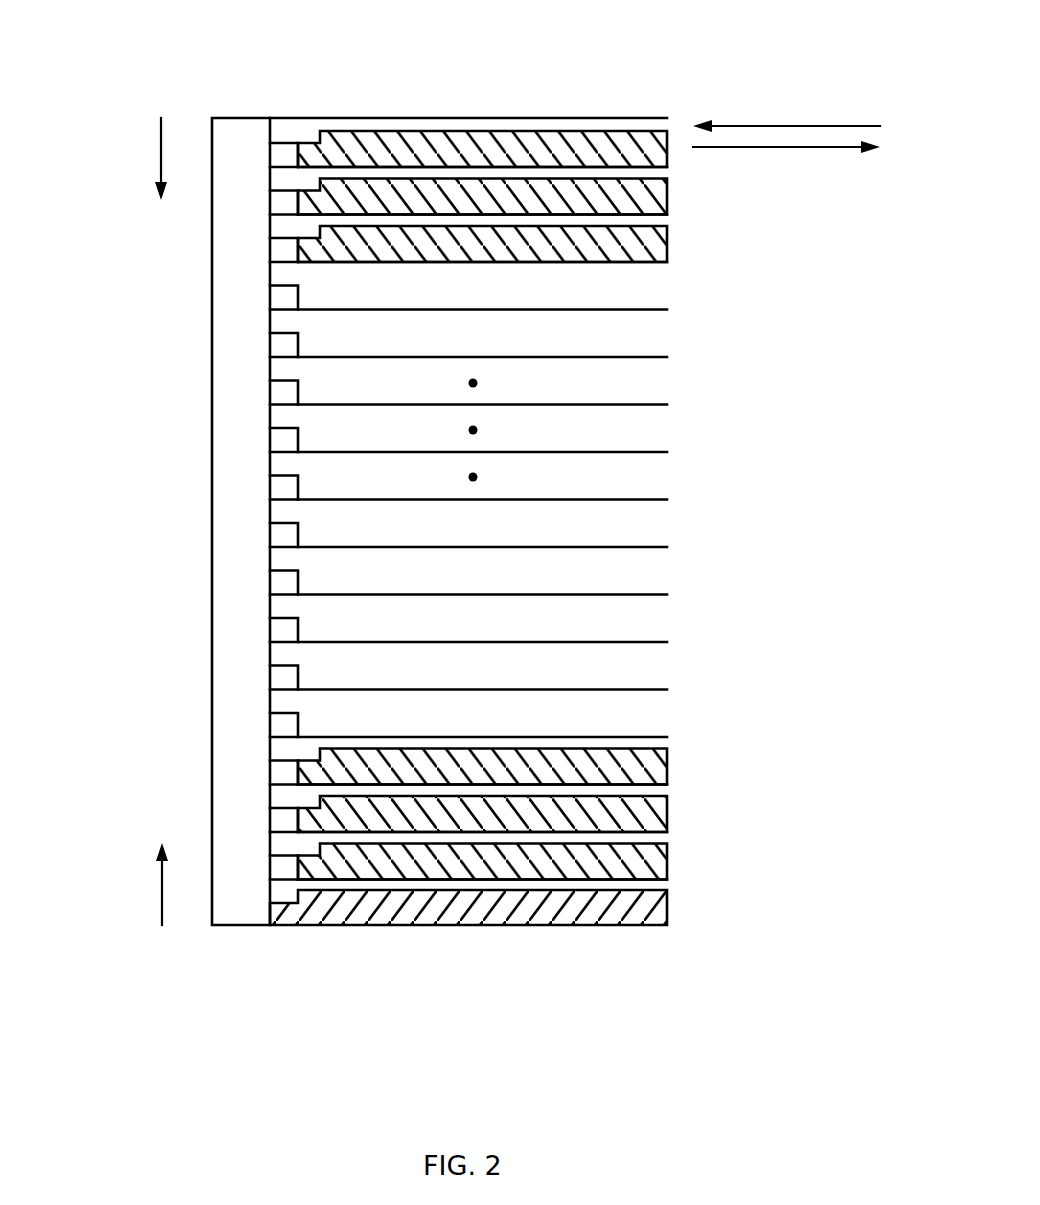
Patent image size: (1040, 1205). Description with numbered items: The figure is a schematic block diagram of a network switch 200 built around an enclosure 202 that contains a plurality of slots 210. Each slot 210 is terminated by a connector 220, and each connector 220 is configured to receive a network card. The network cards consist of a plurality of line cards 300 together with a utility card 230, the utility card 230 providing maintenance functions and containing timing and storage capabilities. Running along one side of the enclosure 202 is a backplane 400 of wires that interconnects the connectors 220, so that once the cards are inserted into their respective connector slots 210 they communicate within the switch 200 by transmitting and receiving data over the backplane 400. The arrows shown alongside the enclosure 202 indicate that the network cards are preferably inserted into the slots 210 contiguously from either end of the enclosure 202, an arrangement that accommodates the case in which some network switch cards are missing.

The network switch 200 is at (108, 70).
The enclosure 202 is at (653, 117).
The slots 210 is at (655, 334).
The connectors 220 is at (286, 152).
The utility card 230 is at (667, 908).
The line cards 300 is at (667, 193).
The backplane 400 is at (232, 305).